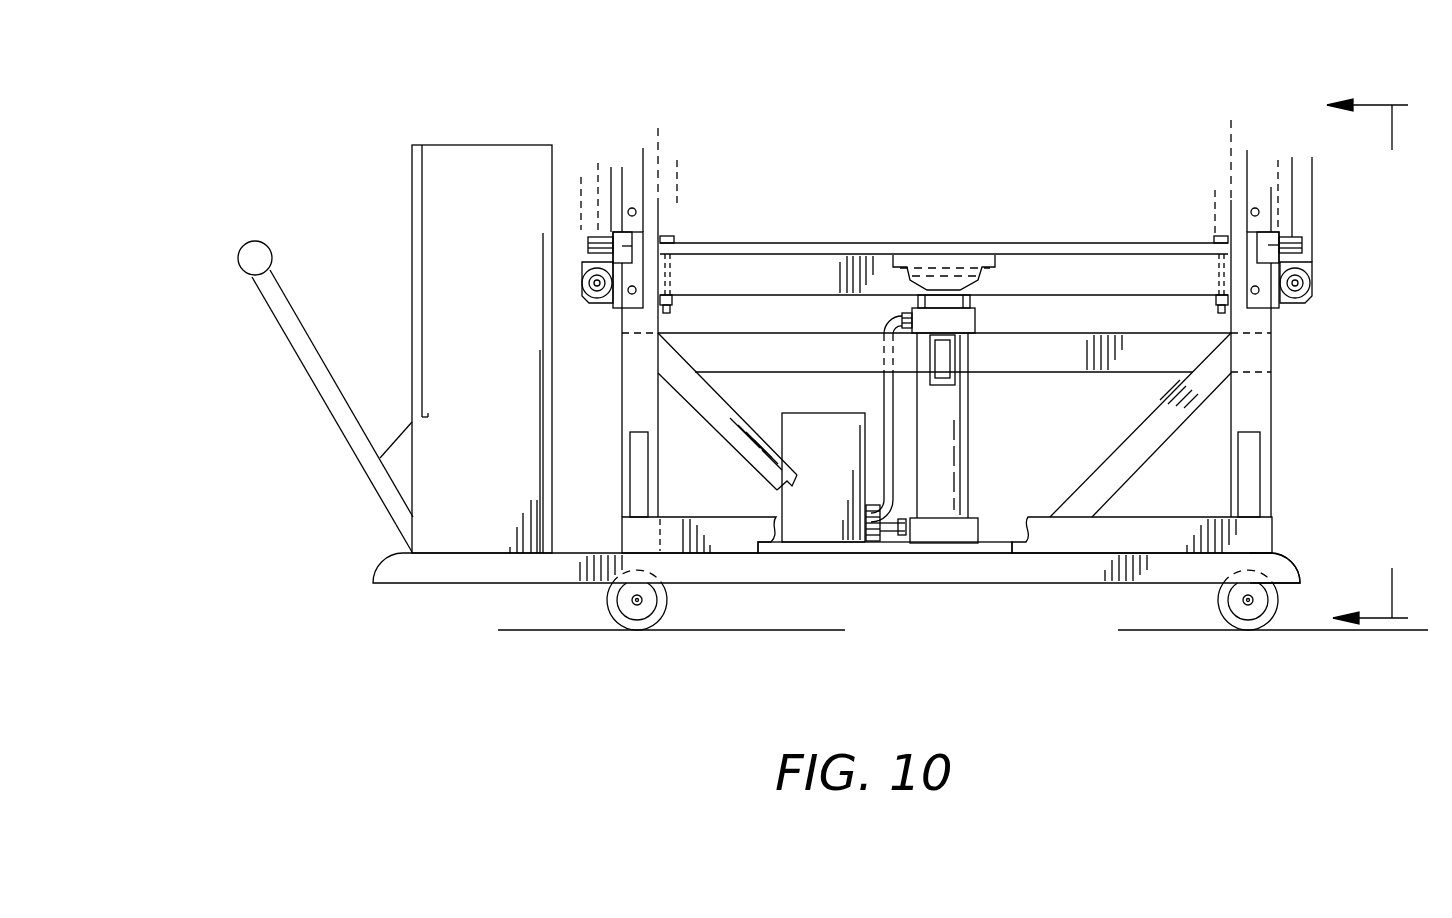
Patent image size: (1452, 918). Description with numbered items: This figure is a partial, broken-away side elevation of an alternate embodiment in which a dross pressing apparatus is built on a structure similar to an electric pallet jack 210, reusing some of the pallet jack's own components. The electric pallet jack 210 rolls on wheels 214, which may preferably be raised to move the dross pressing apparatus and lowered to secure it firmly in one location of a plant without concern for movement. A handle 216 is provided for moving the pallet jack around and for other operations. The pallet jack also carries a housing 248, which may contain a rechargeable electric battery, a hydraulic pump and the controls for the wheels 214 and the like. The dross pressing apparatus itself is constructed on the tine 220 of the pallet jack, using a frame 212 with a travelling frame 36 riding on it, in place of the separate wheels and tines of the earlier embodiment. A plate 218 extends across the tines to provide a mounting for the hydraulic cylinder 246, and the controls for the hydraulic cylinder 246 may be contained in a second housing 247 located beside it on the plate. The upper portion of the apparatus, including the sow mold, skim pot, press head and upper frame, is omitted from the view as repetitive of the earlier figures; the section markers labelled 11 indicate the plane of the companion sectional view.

The section line 11- 11 is at (1389, 360).
The travelling frame 36 is at (1317, 260).
The electric pallet jack 210 is at (985, 585).
The frame 212 is at (1272, 415).
The wheels 214 is at (640, 630).
The handle 216 is at (238, 262).
The plate 218 is at (997, 542).
The tine 220 is at (1295, 562).
The hydraulic cylinder 246 is at (970, 435).
The housing 247 is at (833, 412).
The housing 248 is at (488, 145).